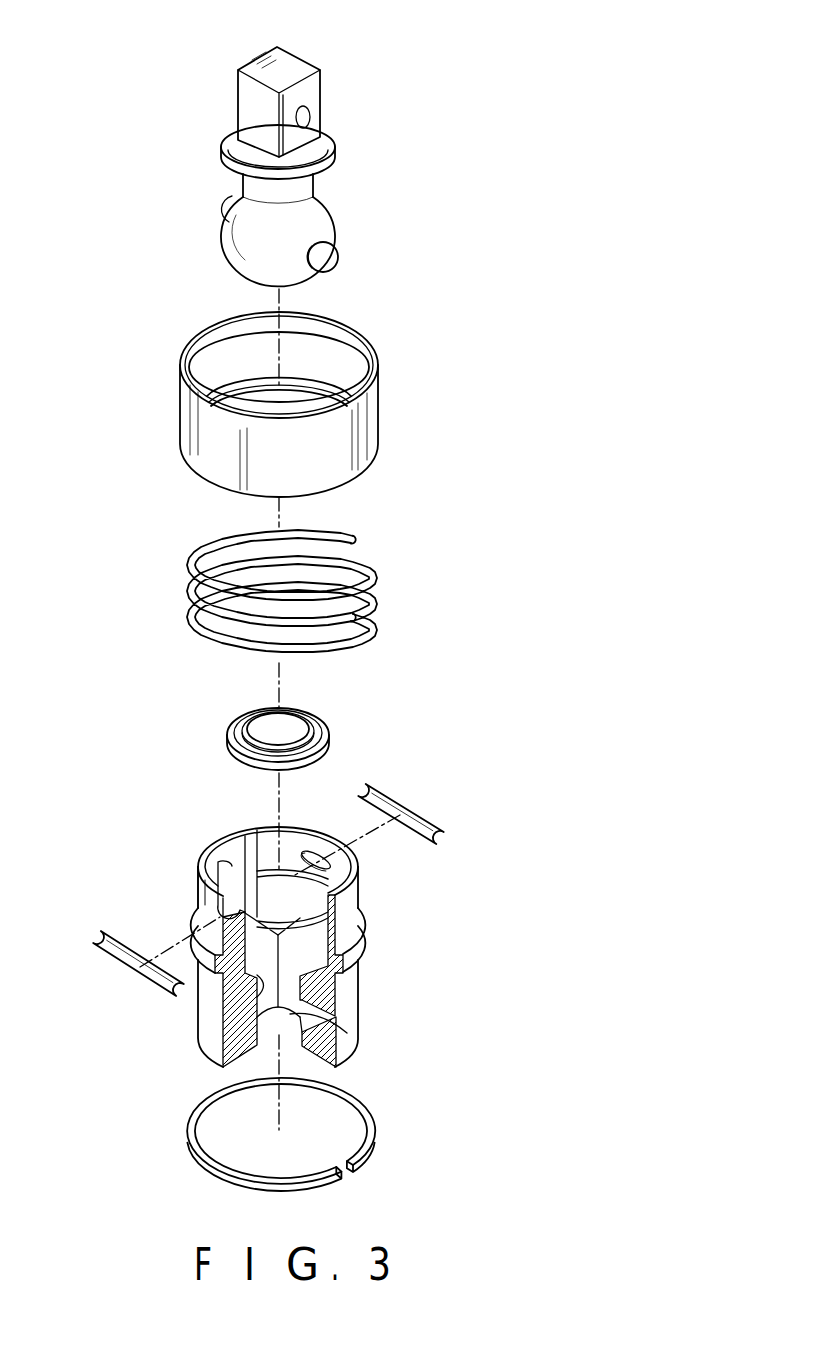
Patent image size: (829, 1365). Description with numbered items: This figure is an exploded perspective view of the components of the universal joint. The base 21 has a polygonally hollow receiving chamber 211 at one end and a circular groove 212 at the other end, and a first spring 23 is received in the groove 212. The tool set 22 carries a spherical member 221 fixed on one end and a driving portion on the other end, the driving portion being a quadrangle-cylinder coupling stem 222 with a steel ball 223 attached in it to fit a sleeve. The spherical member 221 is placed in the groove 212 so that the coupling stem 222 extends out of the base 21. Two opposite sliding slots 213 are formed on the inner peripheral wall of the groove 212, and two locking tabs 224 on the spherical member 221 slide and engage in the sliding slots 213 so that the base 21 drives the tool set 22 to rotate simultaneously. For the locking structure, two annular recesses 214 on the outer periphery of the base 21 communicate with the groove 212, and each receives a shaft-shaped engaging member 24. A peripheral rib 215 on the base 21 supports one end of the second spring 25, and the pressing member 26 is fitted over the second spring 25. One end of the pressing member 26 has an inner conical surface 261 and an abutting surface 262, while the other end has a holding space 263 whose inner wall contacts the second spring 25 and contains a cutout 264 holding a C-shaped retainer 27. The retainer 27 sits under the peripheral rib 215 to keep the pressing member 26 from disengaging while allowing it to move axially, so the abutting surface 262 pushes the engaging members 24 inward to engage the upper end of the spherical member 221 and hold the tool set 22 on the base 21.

The base 21 is at (286, 919).
The polygonally hollow receiving chamber 211 is at (288, 1018).
The circular groove 212 is at (268, 852).
The sliding slots 213 is at (232, 848).
The annular recesses 214 is at (203, 898).
The peripheral rib 215 is at (368, 942).
The tool set 22 is at (328, 142).
The spherical member 221 is at (325, 223).
The coupling stem 222 is at (307, 67).
The steel ball 223 is at (310, 110).
The locking tabs 224 is at (335, 258).
The first spring 23 is at (320, 722).
The engaging members 24 is at (403, 805).
The second spring 25 is at (370, 568).
The pressing member 26 is at (288, 374).
The inner conical surface 261 is at (227, 332).
The abutting surface 262 is at (212, 357).
The holding space 263 is at (330, 363).
The cutout 264 is at (232, 387).
The C-shaped retainer 27 is at (358, 1110).